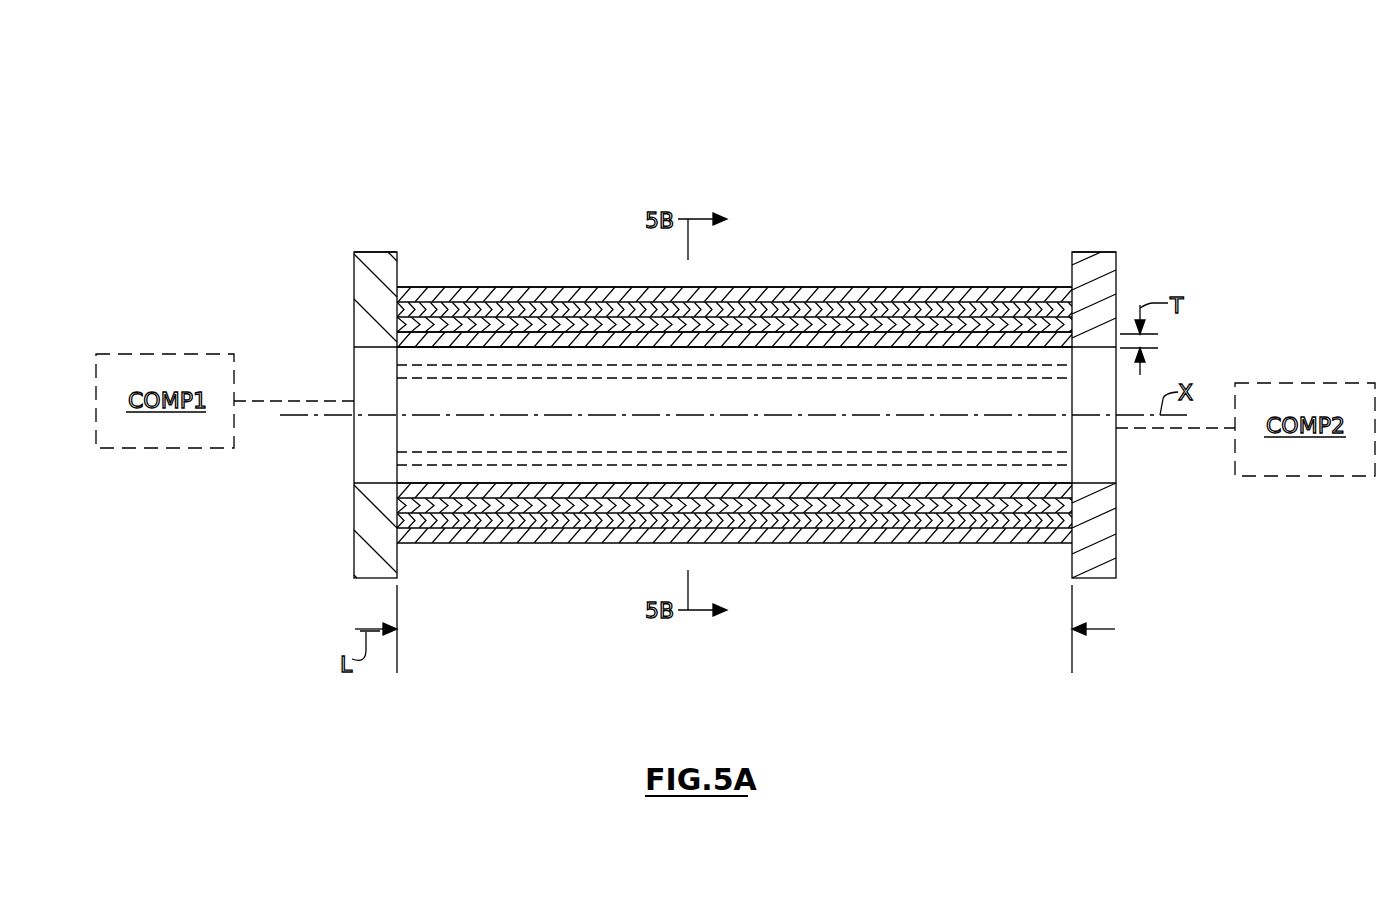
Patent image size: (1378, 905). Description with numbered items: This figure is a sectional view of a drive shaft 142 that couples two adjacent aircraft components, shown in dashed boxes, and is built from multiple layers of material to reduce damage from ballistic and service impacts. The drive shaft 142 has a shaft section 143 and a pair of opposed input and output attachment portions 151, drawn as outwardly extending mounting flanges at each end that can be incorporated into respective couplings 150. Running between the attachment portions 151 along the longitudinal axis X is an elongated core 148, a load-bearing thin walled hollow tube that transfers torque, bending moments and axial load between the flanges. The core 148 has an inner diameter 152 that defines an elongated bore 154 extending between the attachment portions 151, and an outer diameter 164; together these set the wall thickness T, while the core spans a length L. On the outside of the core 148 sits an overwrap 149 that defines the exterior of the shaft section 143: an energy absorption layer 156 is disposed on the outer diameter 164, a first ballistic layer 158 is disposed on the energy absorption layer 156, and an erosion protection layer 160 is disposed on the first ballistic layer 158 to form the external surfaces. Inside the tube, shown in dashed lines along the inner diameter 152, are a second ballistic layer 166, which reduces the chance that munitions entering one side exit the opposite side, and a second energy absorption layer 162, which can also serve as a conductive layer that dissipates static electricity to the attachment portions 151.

The drive shaft 142 is at (366, 128).
The shaft section 143 is at (968, 277).
The core 148 is at (418, 347).
The overwrap 149 is at (1012, 287).
The coupling 150 is at (367, 242).
The attachment portion 151 is at (357, 252).
The inner diameter 152 is at (478, 346).
The bore 154 is at (752, 444).
The energy absorption layer 156 is at (549, 308).
The first ballistic layer 158 is at (622, 296).
The erosion protection layer 160 is at (710, 287).
The second energy absorption layer 162 is at (753, 347).
The outer diameter 164 is at (823, 332).
The second ballistic layer 166 is at (887, 365).